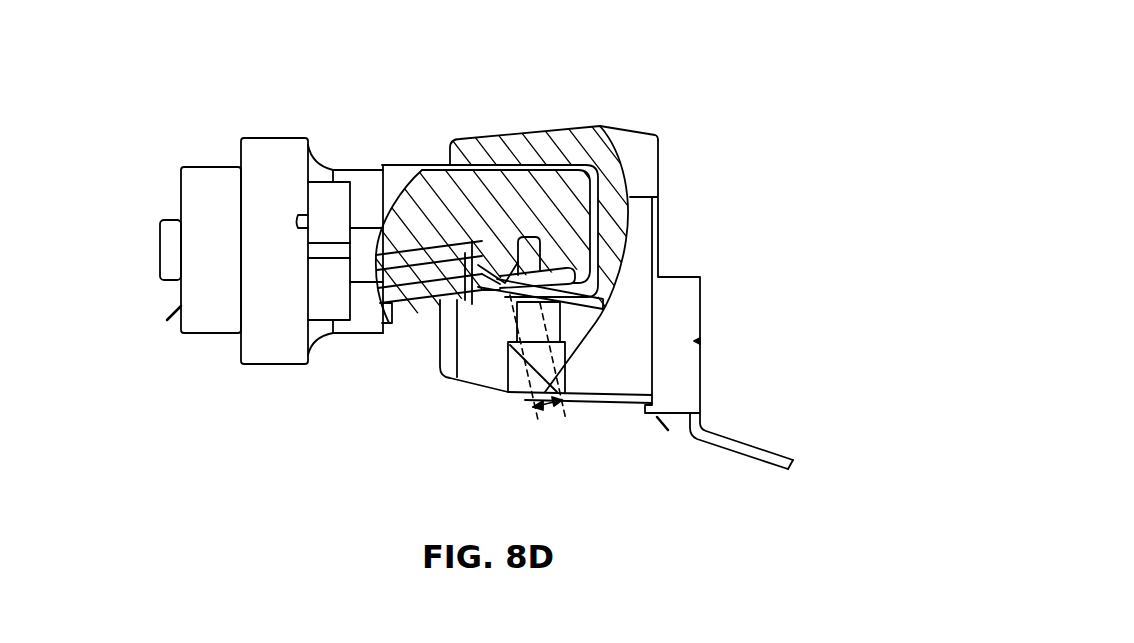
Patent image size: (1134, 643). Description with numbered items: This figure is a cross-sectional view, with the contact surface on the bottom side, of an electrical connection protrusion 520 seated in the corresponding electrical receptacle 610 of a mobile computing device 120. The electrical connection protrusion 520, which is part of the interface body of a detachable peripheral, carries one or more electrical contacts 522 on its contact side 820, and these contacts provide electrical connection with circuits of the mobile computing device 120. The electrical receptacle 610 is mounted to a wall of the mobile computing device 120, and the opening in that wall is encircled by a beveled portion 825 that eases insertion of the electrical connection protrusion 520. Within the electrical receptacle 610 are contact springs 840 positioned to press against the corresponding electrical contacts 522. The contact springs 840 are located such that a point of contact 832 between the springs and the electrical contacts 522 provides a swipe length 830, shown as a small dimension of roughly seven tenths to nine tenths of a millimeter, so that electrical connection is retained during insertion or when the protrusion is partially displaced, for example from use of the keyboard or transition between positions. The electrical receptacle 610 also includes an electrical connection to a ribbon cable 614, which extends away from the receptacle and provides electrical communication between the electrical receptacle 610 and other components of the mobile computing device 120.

The mobile computing device 120 is at (608, 123).
The electrical connection protrusion 520 is at (383, 165).
The electrical contacts 522 is at (463, 297).
The electrical receptacle 610 is at (524, 150).
The ribbon cable 614 is at (773, 452).
The contact side 820 is at (392, 333).
The beveled portion 825 is at (445, 163).
The swipe length 830 is at (553, 415).
The point of contact 832 is at (505, 273).
The contact springs 840 is at (568, 300).